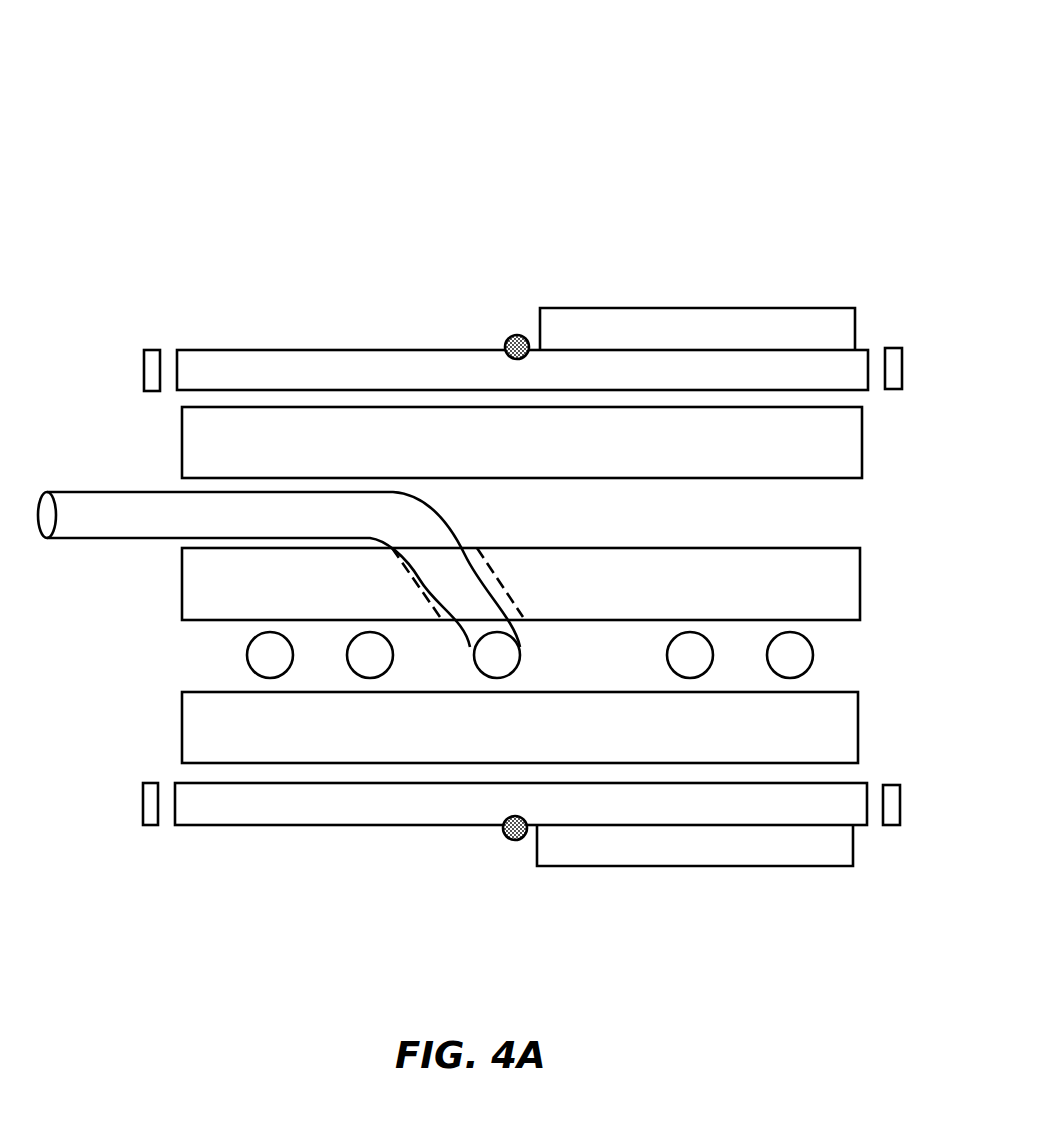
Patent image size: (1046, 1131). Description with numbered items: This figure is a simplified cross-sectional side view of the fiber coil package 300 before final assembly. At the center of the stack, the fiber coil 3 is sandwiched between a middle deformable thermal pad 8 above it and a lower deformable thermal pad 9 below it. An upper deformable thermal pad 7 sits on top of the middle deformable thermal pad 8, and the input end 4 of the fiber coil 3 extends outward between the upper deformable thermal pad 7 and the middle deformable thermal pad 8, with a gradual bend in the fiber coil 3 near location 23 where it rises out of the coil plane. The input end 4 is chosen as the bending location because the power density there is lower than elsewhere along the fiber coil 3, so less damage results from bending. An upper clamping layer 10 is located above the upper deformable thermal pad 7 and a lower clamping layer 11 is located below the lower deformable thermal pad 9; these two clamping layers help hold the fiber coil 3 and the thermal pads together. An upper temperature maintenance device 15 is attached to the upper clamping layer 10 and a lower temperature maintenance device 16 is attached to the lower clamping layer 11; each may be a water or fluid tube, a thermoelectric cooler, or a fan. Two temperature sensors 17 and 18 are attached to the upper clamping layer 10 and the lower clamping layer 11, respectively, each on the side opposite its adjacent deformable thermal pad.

The fiber coil package 300 is at (708, 52).
The upper clamping layer 10 is at (205, 348).
The upper temperature maintenance device 15 is at (732, 308).
The temperature sensor 17 is at (513, 335).
The upper deformable thermal pad 7 is at (182, 437).
The input end of the fiber coil 4 is at (113, 538).
The bend location 23 is at (440, 515).
The middle deformable thermal pad 8 is at (182, 585).
The fiber coil 3 is at (246, 655).
The lower deformable thermal pad 9 is at (182, 733).
The lower clamping layer 11 is at (190, 825).
The temperature sensor 18 is at (513, 840).
The lower temperature maintenance device 16 is at (723, 870).